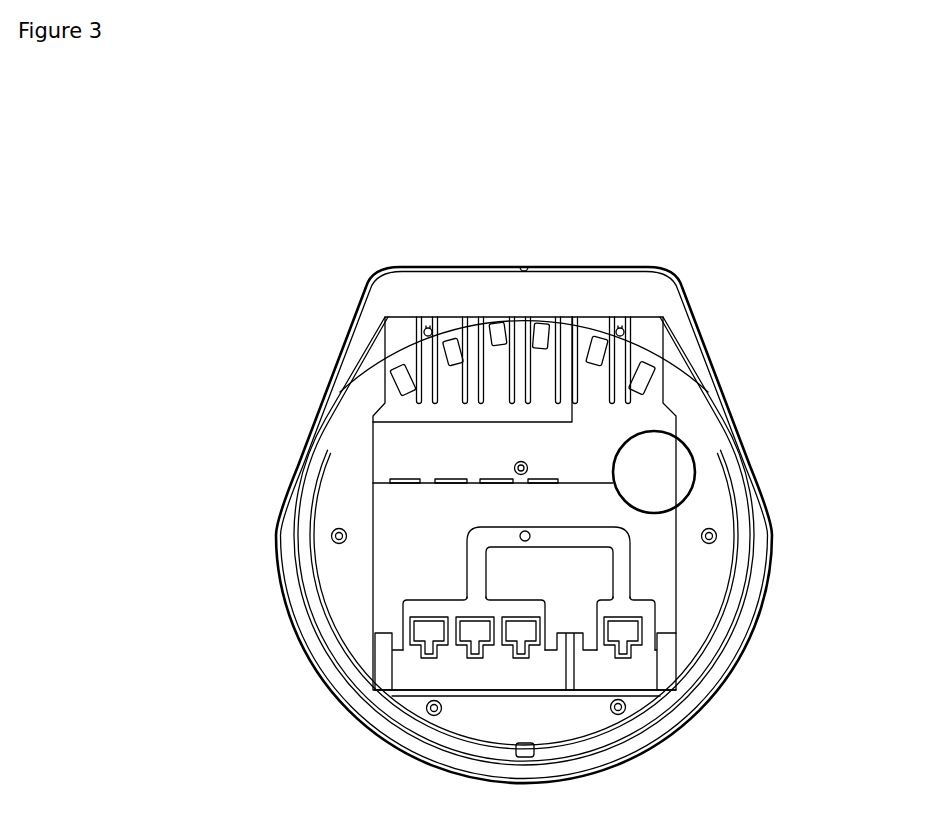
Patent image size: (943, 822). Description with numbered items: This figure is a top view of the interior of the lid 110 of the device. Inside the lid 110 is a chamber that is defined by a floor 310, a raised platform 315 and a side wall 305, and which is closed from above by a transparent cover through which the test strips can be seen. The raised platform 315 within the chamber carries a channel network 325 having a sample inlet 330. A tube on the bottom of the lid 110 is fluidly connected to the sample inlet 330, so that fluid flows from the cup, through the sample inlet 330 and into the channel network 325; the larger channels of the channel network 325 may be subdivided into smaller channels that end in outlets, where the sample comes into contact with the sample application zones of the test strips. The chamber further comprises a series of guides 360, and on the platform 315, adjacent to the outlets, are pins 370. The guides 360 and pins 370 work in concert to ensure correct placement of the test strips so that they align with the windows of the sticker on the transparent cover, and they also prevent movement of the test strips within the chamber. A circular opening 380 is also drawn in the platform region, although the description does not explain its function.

The lid 110 is at (781, 304).
The side wall 305 is at (345, 372).
The floor 310 is at (340, 458).
The raised platform 315 is at (395, 517).
The channel network 325 is at (621, 566).
The sample inlet 330 is at (533, 537).
The guides 360 is at (628, 376).
The pins 370 is at (480, 630).
The circular opening 380 is at (672, 468).